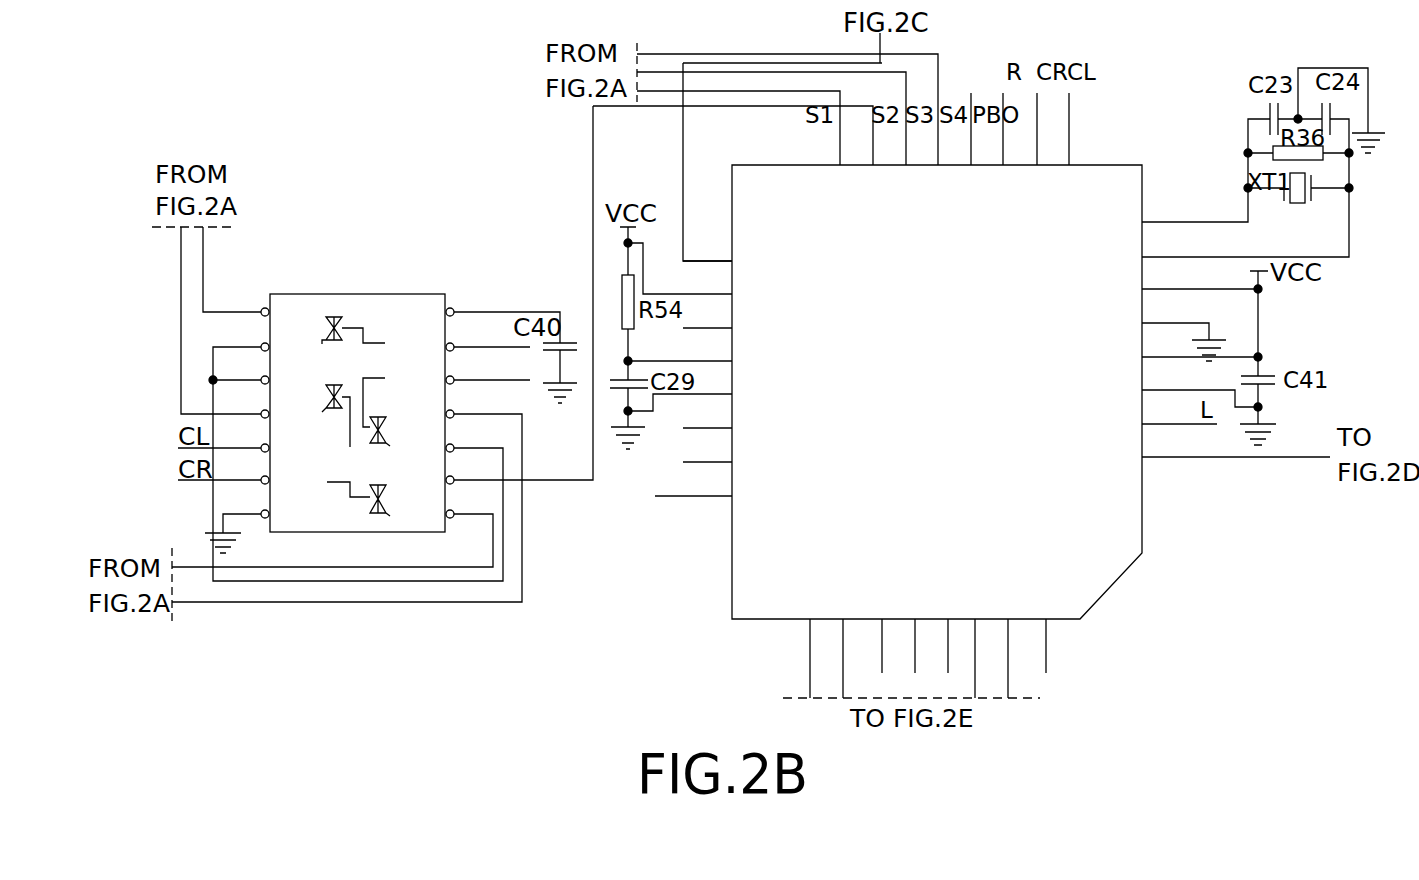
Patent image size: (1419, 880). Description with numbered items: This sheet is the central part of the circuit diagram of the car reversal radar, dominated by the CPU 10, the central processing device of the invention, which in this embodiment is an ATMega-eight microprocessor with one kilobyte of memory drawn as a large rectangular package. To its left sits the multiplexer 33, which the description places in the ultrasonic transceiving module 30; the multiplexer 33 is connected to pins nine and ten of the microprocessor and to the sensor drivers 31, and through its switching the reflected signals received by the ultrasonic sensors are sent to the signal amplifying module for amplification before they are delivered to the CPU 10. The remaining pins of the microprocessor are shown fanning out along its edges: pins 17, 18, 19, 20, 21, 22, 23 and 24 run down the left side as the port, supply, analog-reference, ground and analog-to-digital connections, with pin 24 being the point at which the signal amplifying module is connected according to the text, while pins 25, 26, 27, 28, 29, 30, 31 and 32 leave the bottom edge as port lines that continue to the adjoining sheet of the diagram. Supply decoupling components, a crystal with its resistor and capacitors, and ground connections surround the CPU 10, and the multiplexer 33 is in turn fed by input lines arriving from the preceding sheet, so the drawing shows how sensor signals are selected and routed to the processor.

The multiplexer 33 is at (358, 308).
The CPU 10 is at (1098, 586).
The microcontroller pin 17 (PB5) 17 is at (707, 250).
The microcontroller pin 18 (VCC) 18 is at (680, 269).
The microcontroller pin 19 (ADC8) 19 is at (707, 317).
The microcontroller pin 20 (AREF) 20 is at (680, 350).
The microcontroller pin 21 (GND) 21 is at (680, 391).
The microcontroller pin 22 (ADC7) 22 is at (707, 417).
The microcontroller pin 23 (PC0) 23 is at (707, 451).
The pin 24 of the microprocessor 24 is at (693, 485).
The microcontroller pin 25 (PC2) 25 is at (800, 658).
The microcontroller pin 26 (PC3) 26 is at (833, 658).
The microcontroller pin 27 (PC4) 27 is at (872, 646).
The microcontroller pin 28 (PC5) 28 is at (905, 646).
The microcontroller pin 29 (PC6) 29 is at (938, 646).
The ultrasonic transceiving module 30 is at (965, 658).
The sensor drivers 31 is at (998, 658).
The microcontroller pin 32 (PD2) 32 is at (1036, 646).